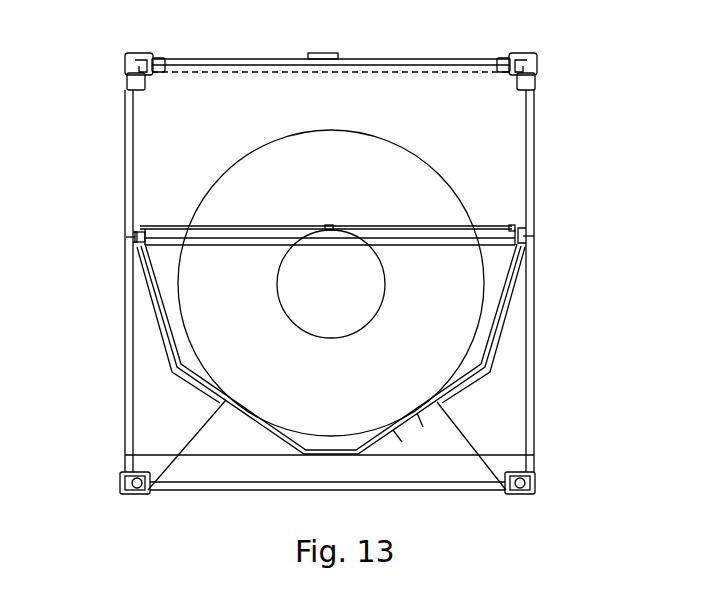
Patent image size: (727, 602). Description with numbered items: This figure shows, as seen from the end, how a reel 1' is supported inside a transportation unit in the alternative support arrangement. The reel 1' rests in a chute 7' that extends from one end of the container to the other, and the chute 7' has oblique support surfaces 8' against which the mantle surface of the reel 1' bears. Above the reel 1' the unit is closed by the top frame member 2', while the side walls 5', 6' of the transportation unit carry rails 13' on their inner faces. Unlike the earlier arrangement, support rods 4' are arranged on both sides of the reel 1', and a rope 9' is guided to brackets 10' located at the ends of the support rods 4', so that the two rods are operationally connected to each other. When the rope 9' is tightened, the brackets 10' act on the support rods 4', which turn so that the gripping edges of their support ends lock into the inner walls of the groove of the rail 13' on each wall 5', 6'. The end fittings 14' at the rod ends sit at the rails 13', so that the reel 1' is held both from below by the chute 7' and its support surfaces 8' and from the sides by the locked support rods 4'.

The reel 1' is at (331, 224).
The top frame beam 2' is at (331, 51).
The support rod 4' is at (284, 264).
The wall 5' is at (556, 281).
The wall 6' is at (100, 283).
The chute 7' is at (363, 368).
The oblique support surface 8' is at (365, 349).
The rope 9' is at (326, 121).
The bracket 10' is at (321, 170).
The rail 13' is at (324, 205).
The locking pin 14' is at (324, 230).